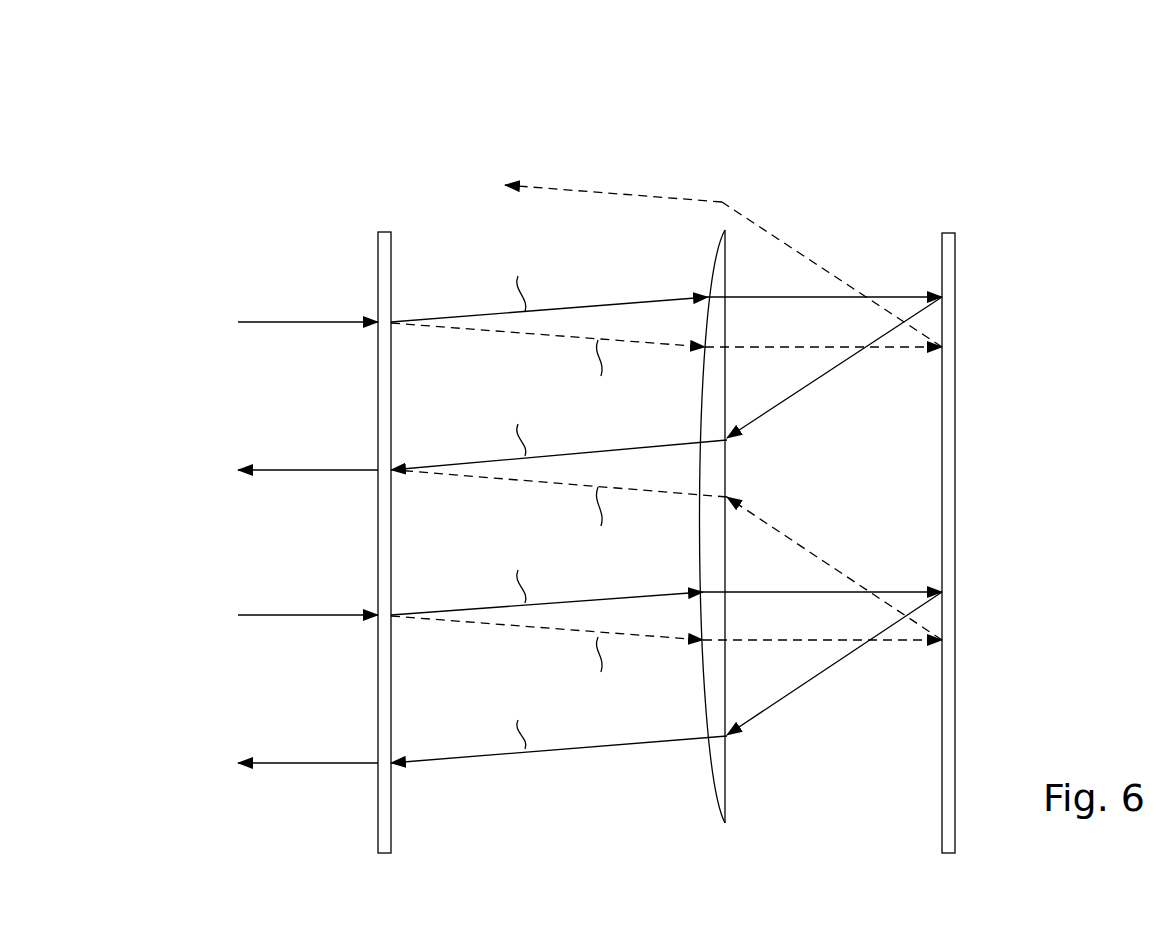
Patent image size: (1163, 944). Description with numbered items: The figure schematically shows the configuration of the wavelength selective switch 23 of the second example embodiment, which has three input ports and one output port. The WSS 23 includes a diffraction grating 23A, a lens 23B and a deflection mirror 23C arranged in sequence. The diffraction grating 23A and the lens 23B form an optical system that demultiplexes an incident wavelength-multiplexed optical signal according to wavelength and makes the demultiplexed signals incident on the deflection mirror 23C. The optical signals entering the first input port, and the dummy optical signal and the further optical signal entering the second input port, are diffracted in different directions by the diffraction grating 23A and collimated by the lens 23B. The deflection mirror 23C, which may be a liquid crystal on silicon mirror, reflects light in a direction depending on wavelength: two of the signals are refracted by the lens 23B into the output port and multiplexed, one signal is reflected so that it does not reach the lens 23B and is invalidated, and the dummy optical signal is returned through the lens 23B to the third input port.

The wavelength selective switch (WSS) 23 is at (638, 108).
The diffraction grating 23A is at (382, 232).
The lens 23B is at (710, 806).
The deflection mirror 23C is at (950, 233).